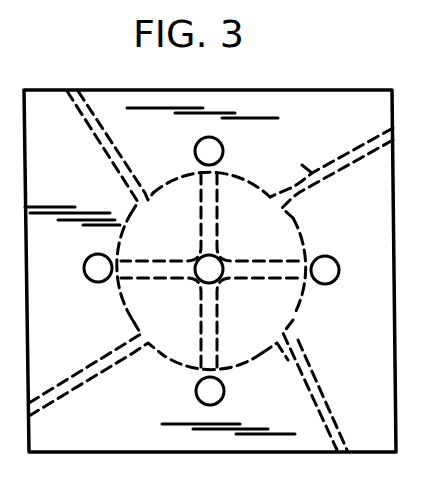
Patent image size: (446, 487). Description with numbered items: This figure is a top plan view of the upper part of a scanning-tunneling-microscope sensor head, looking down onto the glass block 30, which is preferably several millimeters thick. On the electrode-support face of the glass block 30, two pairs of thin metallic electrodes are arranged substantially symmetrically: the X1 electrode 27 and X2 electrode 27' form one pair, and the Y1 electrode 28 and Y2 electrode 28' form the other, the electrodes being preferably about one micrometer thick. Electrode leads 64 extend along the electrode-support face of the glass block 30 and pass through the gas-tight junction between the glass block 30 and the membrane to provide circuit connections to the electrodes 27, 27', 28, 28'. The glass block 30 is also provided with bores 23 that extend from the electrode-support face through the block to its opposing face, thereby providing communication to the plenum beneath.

The glass block 30 is at (336, 139).
The electrode leads 64 is at (105, 148).
The bores 23 is at (330, 258).
The X1 electrode 27 is at (161, 217).
The Y1 electrode 28 is at (259, 217).
The X2 electrode 27' is at (259, 322).
The Y2 electrode 28' is at (161, 322).